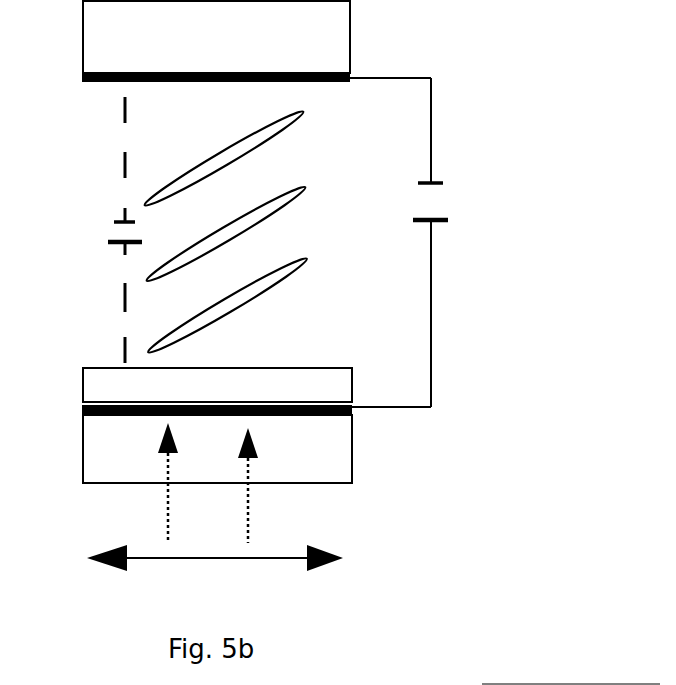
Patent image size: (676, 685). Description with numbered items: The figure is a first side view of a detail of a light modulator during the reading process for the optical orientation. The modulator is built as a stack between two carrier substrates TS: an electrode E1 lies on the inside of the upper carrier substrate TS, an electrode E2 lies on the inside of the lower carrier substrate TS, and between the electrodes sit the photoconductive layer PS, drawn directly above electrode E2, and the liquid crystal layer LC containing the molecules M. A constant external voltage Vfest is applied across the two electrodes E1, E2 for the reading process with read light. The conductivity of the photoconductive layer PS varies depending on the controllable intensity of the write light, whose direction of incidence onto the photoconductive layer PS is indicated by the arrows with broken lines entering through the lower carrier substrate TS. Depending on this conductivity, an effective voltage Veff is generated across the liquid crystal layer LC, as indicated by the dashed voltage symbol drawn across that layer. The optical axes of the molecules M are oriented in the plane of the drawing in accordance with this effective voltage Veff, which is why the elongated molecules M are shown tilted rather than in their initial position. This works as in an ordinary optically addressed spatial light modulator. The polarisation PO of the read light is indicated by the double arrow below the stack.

The carrier substrate TS is at (217, 242).
The electrode E1 is at (350, 77).
The electrode E2 is at (350, 412).
The photoconductive layer PS is at (239, 385).
The liquid crystal layer LC is at (225, 196).
The molecule M is at (253, 295).
The constant external voltage Vfest is at (423, 242).
The effective voltage Veff is at (96, 230).
The polarisation PO is at (236, 558).